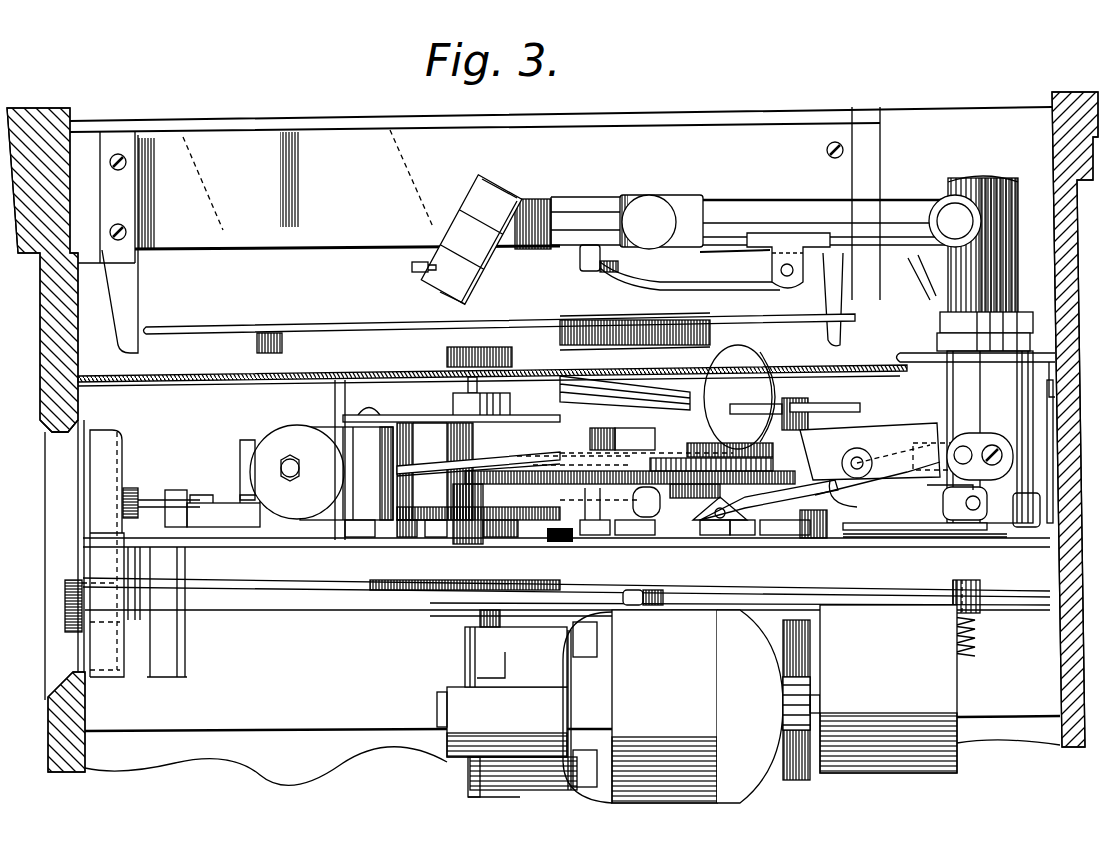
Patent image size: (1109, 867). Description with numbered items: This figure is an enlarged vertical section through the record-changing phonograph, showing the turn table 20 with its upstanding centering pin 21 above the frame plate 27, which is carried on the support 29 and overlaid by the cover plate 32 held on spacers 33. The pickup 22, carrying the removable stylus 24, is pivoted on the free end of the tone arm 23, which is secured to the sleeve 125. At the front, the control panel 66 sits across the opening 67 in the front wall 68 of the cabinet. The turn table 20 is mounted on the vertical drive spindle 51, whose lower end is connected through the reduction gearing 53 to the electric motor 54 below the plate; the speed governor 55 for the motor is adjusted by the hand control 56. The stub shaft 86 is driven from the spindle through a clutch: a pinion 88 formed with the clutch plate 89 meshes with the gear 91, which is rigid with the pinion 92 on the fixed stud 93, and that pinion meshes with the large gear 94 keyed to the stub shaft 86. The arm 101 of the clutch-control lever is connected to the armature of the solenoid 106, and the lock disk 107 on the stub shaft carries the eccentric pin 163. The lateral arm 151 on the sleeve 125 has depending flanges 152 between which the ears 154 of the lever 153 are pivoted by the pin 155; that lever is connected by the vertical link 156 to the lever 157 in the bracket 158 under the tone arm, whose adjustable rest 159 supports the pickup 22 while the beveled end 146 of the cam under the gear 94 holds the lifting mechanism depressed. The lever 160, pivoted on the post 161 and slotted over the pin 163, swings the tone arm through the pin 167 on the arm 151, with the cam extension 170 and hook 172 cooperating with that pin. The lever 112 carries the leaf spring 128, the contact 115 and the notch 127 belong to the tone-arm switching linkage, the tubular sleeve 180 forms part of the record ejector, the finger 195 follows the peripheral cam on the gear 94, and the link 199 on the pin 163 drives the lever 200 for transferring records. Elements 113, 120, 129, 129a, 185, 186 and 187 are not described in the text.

The turn table 20 is at (375, 342).
The centering pin 21 is at (488, 320).
The pickup 22 is at (505, 190).
The tone arm 23 is at (733, 210).
The stylus 24 is at (440, 298).
The frame plate 27 is at (272, 580).
The support 29 is at (210, 723).
The cover plate 32 is at (246, 382).
The spacers 33 is at (1040, 498).
The drive spindle 51 is at (465, 387).
The reduction gearing 53 is at (468, 700).
The electric motor 54 is at (691, 706).
The speed governor 55 is at (880, 770).
The hand control 56 is at (975, 585).
The control panel 66 is at (105, 440).
The opening 67 is at (55, 424).
The front wall 68 is at (55, 368).
The stub shaft 86 is at (635, 605).
The pinion 88 is at (435, 530).
The clutch plate 89 is at (445, 480).
The gear 91 is at (410, 530).
The pinion 92 is at (455, 440).
The stud 93 is at (502, 530).
The large gear 94 is at (585, 505).
The arm 101 is at (410, 475).
The solenoid 106 is at (268, 450).
The lock disk 107 is at (606, 437).
The lever 112 is at (898, 533).
The panel 113 is at (332, 143).
The contact 115 is at (140, 294).
The bracket 120 is at (920, 495).
The sleeve 125 is at (1028, 198).
The notch 127 is at (640, 528).
The leaf spring 128 is at (782, 530).
The gear 129 is at (716, 528).
The gear 129a is at (740, 534).
The beveled lead end 146 is at (650, 505).
The lateral arm 151 is at (946, 437).
The side flanges 152 is at (840, 448).
The lever 153 is at (848, 490).
The ears 154 is at (829, 509).
The pin 155 is at (857, 455).
The vertical link 156 is at (920, 383).
The lever 157 is at (740, 285).
The bracket 158 is at (780, 262).
The adjustable rest 159 is at (580, 262).
The lever 160 is at (395, 415).
The post 161 is at (357, 535).
The pin 163 is at (585, 395).
The pin 167 is at (802, 403).
The cam extension 170 is at (838, 405).
The hook 172 is at (765, 410).
The tubular sleeve 180 is at (615, 360).
The disc 185 is at (755, 360).
The gear 186 is at (540, 350).
The arm 187 is at (435, 440).
The finger 195 is at (595, 528).
The link 199 is at (690, 445).
The lever 200 is at (800, 482).